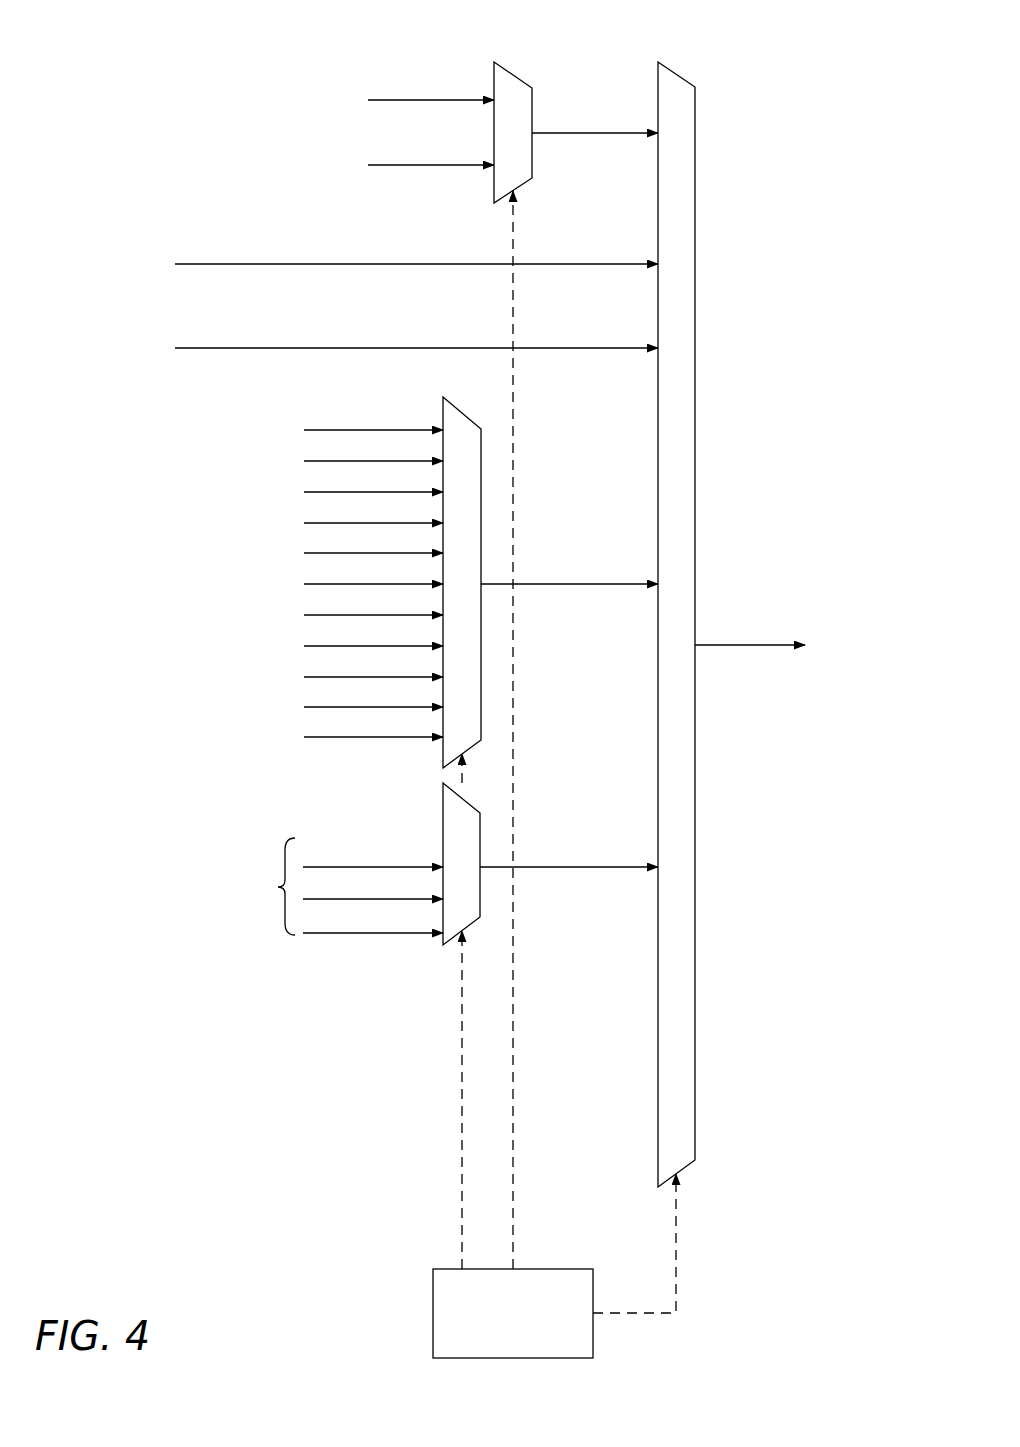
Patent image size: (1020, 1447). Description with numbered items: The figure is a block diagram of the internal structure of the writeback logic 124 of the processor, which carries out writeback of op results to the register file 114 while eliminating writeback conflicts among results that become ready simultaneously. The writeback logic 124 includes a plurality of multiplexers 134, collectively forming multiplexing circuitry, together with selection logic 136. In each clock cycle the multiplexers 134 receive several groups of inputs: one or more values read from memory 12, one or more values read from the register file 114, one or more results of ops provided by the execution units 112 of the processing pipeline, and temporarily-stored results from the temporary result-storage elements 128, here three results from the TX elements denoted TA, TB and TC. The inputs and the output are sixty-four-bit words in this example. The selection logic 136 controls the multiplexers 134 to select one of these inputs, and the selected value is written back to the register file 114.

The writeback logic 124 is at (153, 42).
The multiplexers 134 is at (523, 77).
The memory 12 is at (201, 174).
The register file 114 is at (56, 343).
The execution units 112 is at (245, 666).
The temporary result-storage elements 128 is at (208, 933).
The selection logic 136 is at (433, 1308).